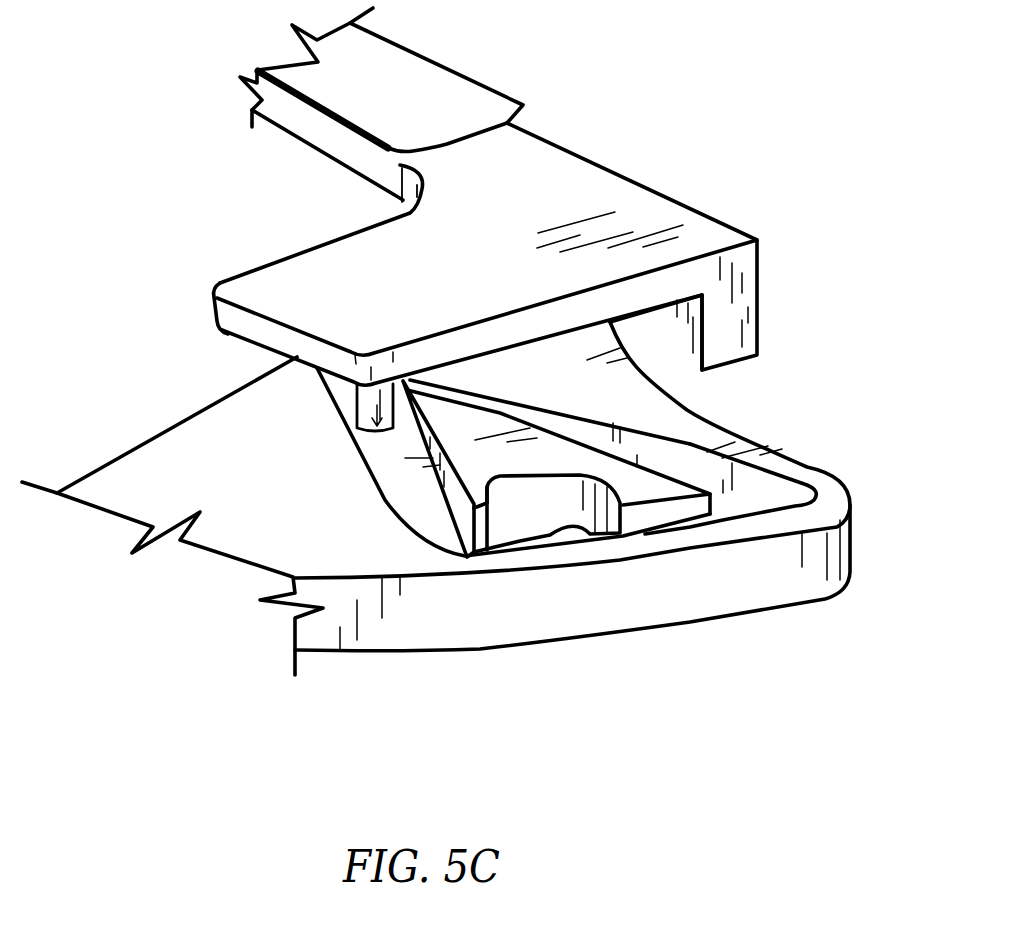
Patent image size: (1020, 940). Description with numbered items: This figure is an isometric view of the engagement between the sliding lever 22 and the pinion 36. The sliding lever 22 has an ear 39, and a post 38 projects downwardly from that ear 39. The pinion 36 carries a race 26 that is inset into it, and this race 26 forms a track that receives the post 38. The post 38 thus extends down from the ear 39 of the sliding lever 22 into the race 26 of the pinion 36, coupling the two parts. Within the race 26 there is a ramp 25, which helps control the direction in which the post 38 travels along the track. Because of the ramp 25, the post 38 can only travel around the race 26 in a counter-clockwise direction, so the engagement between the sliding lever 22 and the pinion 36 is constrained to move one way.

The sliding lever 22 is at (440, 50).
The ear 39 is at (351, 308).
The post 38 is at (357, 398).
The ramp 25 is at (453, 410).
The race 26 is at (743, 499).
The pinion 36 is at (670, 600).